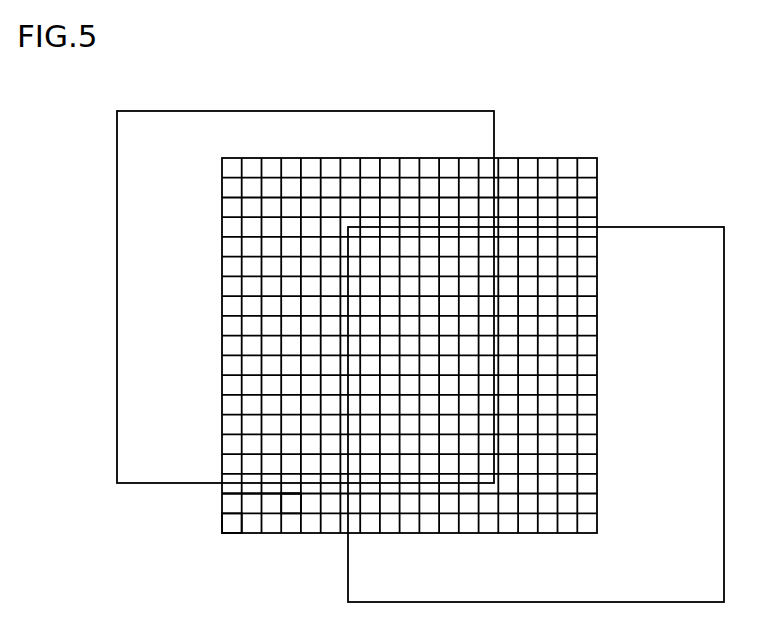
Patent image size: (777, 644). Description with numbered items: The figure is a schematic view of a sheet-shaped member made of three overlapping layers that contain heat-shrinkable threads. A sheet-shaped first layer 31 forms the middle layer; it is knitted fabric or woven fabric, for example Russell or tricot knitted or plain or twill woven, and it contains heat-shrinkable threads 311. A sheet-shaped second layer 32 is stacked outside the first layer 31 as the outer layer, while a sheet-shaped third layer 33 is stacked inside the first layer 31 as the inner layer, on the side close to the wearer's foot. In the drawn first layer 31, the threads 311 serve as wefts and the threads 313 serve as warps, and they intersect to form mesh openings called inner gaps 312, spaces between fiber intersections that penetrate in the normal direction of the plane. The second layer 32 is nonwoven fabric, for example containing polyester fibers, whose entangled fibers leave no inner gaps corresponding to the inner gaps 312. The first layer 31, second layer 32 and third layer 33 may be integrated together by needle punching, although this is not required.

The first layer 31 is at (564, 157).
The second layer 32 is at (684, 241).
The third layer 33 is at (159, 124).
The heat-shrinkable threads 311 is at (231, 535).
The inner gaps 312 is at (290, 522).
The threads 313 is at (221, 506).